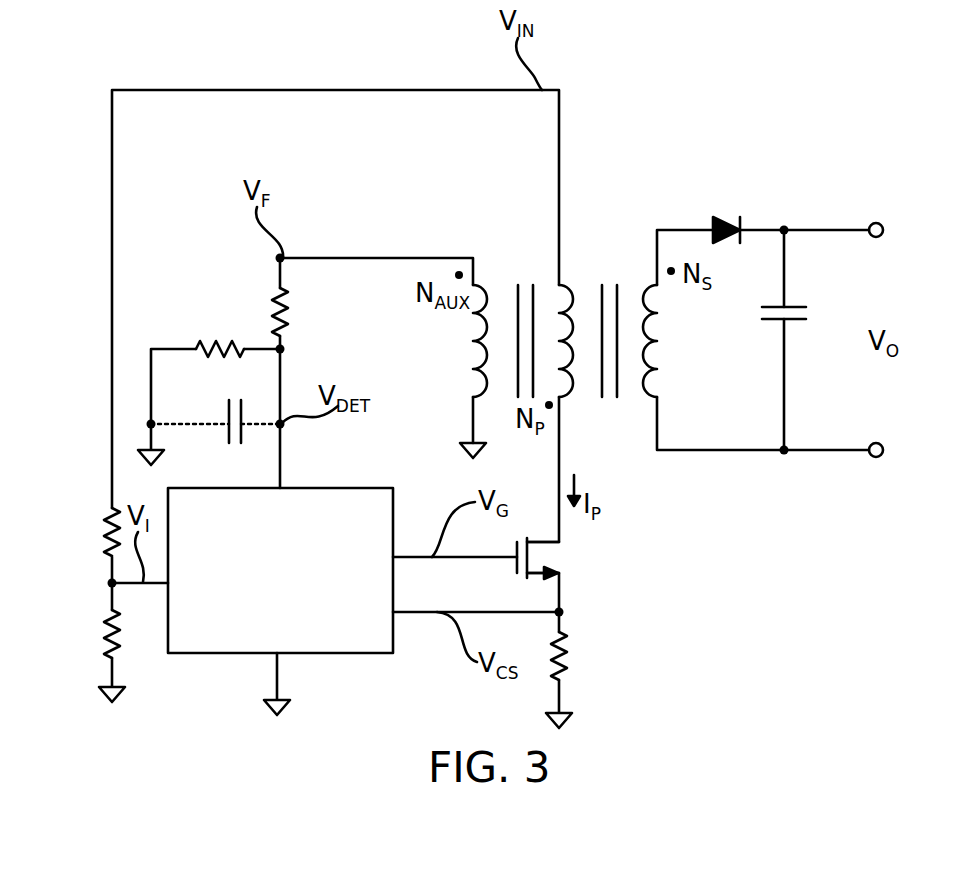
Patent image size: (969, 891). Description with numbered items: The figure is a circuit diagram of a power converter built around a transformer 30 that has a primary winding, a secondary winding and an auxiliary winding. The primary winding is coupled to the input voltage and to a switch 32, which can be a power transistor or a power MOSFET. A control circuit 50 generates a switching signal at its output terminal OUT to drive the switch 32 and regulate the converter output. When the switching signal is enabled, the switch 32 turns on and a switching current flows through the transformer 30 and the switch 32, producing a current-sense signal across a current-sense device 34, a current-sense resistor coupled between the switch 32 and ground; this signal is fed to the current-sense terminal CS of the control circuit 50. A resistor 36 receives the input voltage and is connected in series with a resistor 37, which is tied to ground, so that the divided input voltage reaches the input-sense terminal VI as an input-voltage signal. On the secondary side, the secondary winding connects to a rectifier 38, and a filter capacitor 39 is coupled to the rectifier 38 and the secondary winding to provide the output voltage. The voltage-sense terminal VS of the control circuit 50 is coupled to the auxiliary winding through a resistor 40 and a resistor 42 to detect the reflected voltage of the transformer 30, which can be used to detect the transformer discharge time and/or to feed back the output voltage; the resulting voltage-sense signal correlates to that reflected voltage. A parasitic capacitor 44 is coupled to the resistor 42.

The transformer 30 is at (577, 288).
The switch 32 is at (540, 563).
The current-sense device 34 is at (567, 675).
The resistor 36 is at (108, 520).
The resistor 37 is at (108, 620).
The rectifier 38 is at (712, 228).
The filter capacitor 39 is at (793, 320).
The resistor 40 is at (287, 328).
The resistor 42 is at (210, 347).
The parasitic capacitor 44 is at (228, 412).
The control circuit 50 is at (243, 653).